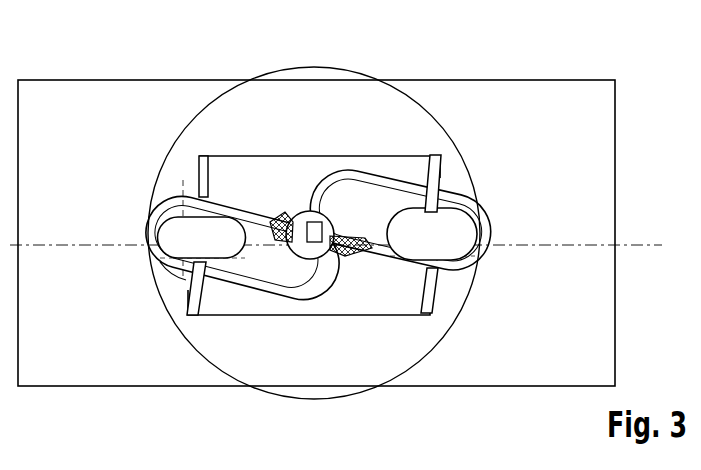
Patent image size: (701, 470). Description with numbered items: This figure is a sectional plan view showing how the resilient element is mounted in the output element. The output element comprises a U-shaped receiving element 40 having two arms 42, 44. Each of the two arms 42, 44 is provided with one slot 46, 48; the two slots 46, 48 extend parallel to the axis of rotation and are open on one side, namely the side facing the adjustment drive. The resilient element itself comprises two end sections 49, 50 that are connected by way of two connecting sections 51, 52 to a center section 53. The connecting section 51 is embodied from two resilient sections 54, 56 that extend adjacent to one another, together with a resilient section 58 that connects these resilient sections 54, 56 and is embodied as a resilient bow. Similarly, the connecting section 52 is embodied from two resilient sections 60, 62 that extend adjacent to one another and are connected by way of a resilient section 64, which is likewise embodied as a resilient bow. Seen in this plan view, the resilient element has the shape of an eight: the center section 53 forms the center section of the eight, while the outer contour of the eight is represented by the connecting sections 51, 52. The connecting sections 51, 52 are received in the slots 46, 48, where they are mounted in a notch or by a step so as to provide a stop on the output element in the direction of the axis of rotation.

The U-shaped receiving element 40 is at (352, 292).
The arm 42 is at (208, 157).
The arm 44 is at (436, 165).
The slot 46 is at (203, 230).
The slot 48 is at (428, 218).
The end section 49 is at (296, 230).
The end section 50 is at (352, 215).
The connecting section 51 is at (173, 283).
The connecting section 52 is at (460, 185).
The center section 53 is at (317, 240).
The resilient section 54 is at (250, 213).
The resilient section 56 is at (233, 273).
The resilient section 58 is at (166, 259).
The resilient section 60 is at (422, 193).
The resilient section 62 is at (393, 255).
The resilient section 64 is at (460, 265).